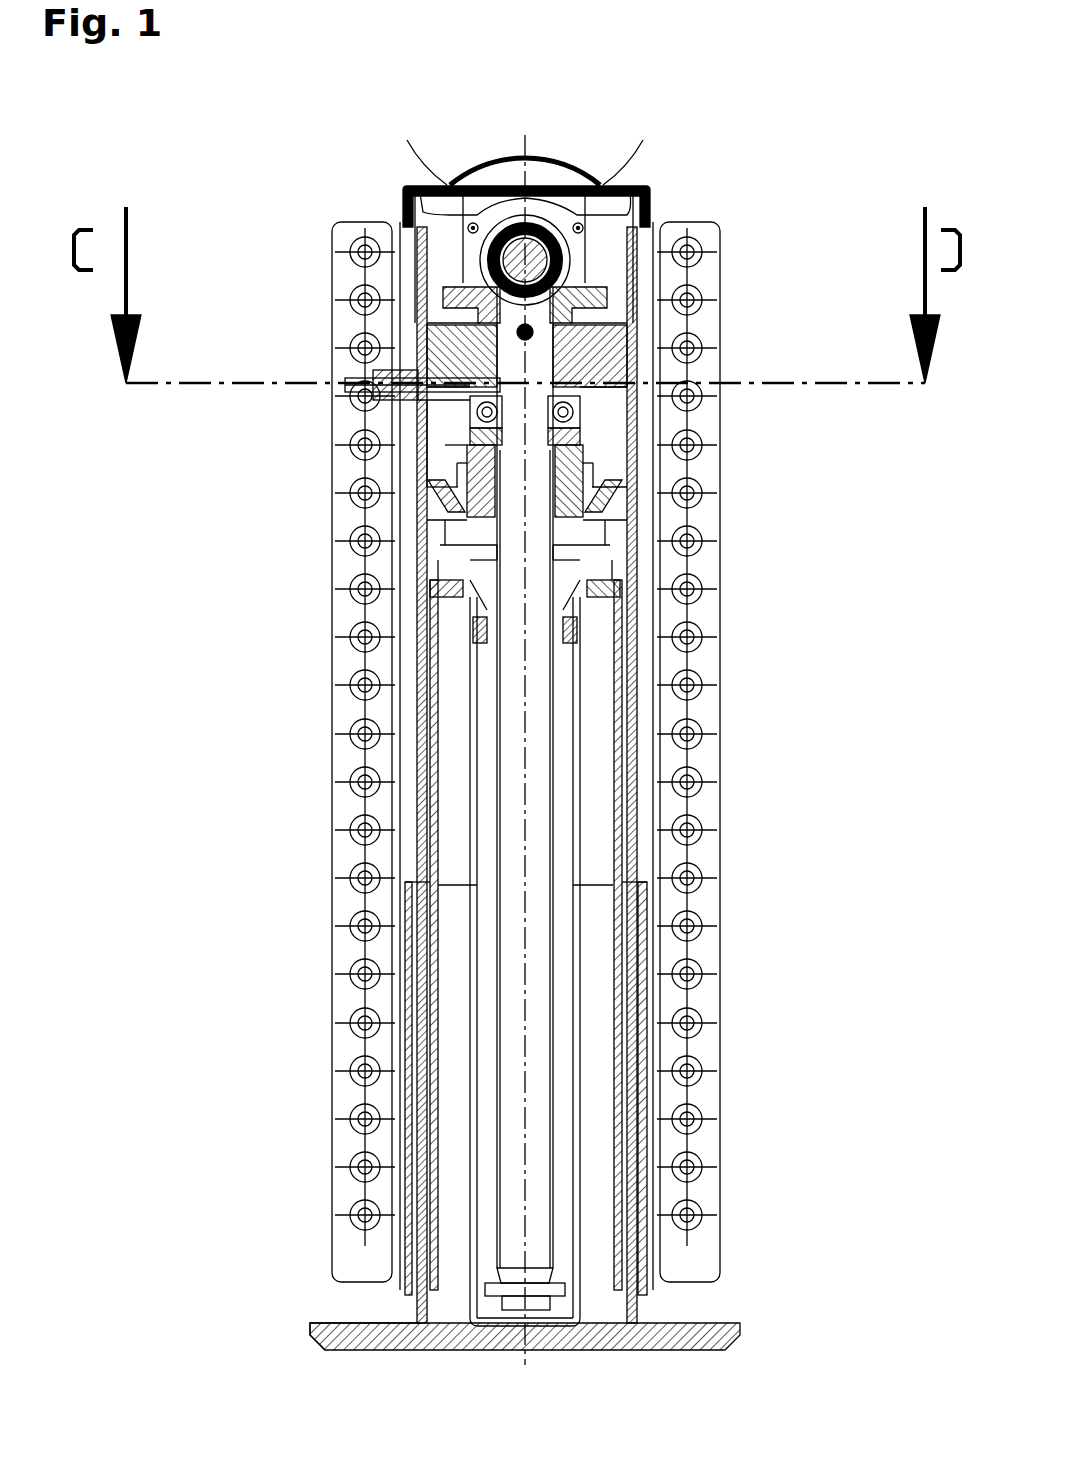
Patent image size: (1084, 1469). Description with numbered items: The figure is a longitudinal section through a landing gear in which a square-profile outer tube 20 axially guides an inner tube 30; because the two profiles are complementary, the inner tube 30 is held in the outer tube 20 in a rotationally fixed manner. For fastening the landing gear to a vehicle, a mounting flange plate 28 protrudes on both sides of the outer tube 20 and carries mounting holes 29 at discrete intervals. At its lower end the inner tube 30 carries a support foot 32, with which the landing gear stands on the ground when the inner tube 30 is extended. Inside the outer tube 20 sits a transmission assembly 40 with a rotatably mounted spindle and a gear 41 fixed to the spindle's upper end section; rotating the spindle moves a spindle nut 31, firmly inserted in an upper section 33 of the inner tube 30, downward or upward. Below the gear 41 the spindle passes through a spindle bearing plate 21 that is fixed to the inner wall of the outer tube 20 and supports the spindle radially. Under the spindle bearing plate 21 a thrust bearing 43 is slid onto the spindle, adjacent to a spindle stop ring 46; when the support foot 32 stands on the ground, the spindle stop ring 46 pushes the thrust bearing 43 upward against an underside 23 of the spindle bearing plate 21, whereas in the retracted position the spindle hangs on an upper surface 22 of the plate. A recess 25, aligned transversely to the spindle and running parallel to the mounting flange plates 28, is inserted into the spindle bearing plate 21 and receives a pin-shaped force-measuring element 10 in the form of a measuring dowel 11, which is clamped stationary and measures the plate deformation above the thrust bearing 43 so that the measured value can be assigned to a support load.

The force-measuring element 10 is at (331, 329).
The measuring dowel 11 is at (331, 329).
The outer tube 20 is at (619, 725).
The spindle bearing plate 21 is at (643, 381).
The upper surface 22 is at (425, 325).
The underside 23 is at (354, 455).
The recess 25 is at (347, 316).
The mounting flange plate 28 is at (523, 756).
The mounting holes 29 is at (580, 733).
The inner tube 30 is at (520, 1276).
The spindle nut 31 is at (625, 581).
The support foot 32 is at (293, 1276).
The upper section 33 is at (643, 694).
The transmission assembly 40 is at (608, 258).
The gear 41 is at (432, 190).
The thrust bearing 43 is at (448, 442).
The spindle stop ring 46 is at (667, 533).